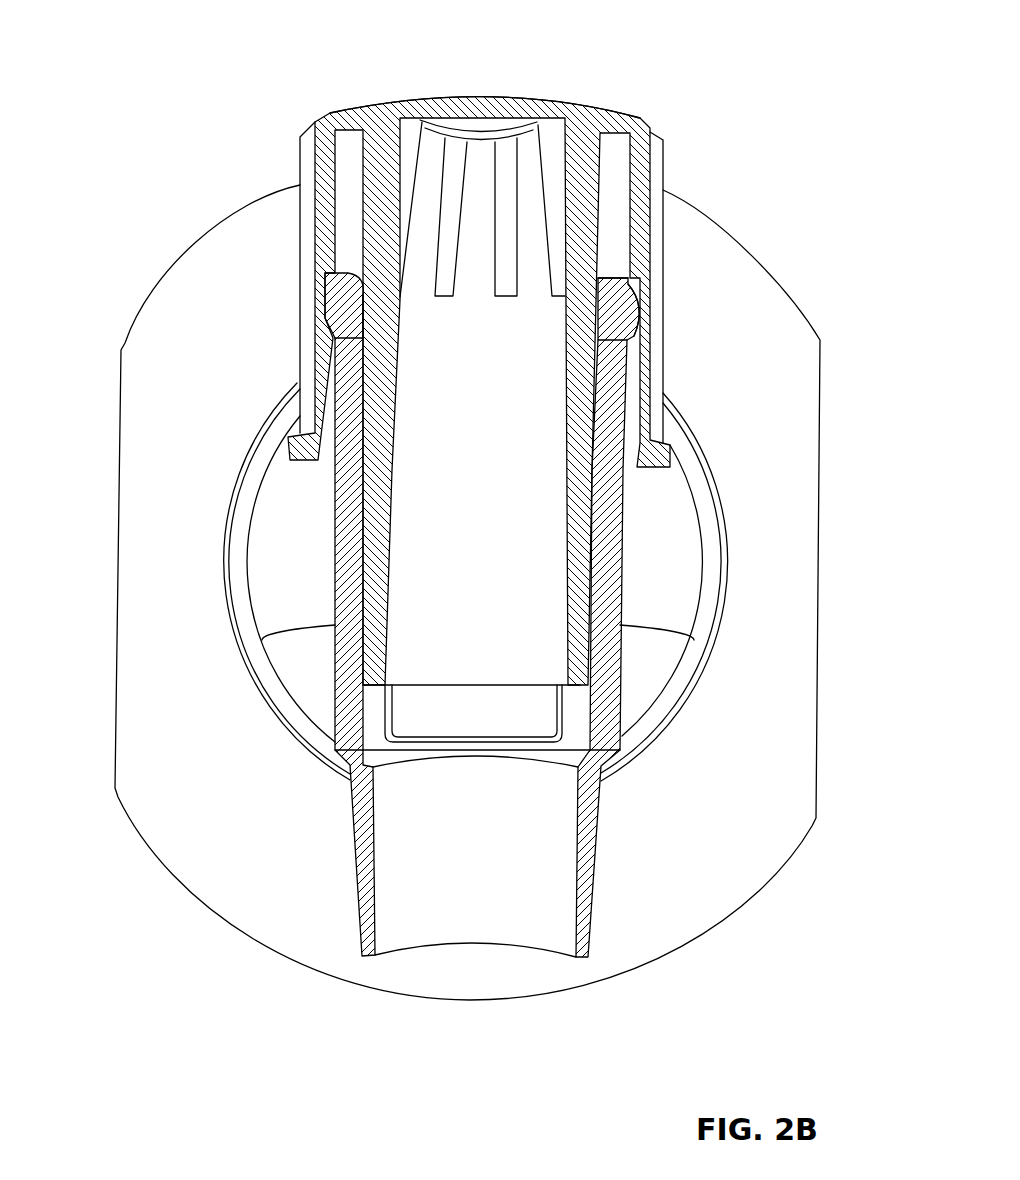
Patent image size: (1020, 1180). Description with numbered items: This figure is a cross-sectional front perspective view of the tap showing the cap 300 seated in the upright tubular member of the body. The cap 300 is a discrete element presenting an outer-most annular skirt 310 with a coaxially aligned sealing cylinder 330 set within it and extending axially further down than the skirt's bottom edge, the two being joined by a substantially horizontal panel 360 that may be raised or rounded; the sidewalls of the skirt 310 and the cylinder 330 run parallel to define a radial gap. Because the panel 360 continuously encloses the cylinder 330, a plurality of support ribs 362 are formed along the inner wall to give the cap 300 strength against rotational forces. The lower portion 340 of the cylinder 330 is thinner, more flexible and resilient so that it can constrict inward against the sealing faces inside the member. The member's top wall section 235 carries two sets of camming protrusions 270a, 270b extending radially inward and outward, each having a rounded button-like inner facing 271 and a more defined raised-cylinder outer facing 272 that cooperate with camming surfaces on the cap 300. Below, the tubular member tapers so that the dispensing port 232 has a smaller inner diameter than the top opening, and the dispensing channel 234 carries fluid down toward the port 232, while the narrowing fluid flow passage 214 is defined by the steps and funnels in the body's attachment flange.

The cap 300 is at (433, 349).
The support ribs 362 is at (415, 128).
The panel 360 is at (500, 108).
The inner facing 271 is at (545, 296).
The annular skirt 310 is at (325, 203).
The camming protrusion 270b is at (335, 303).
The camming protrusion 270a is at (614, 292).
The outer facing 272 is at (641, 324).
The lower portion of cylinder 340 is at (378, 668).
The top wall section 235 is at (628, 518).
The sealing cylinder 330 is at (600, 632).
The fluid flow passage 214 is at (455, 727).
The dispensing port 232 is at (367, 957).
The dispensing channel 234 is at (486, 896).